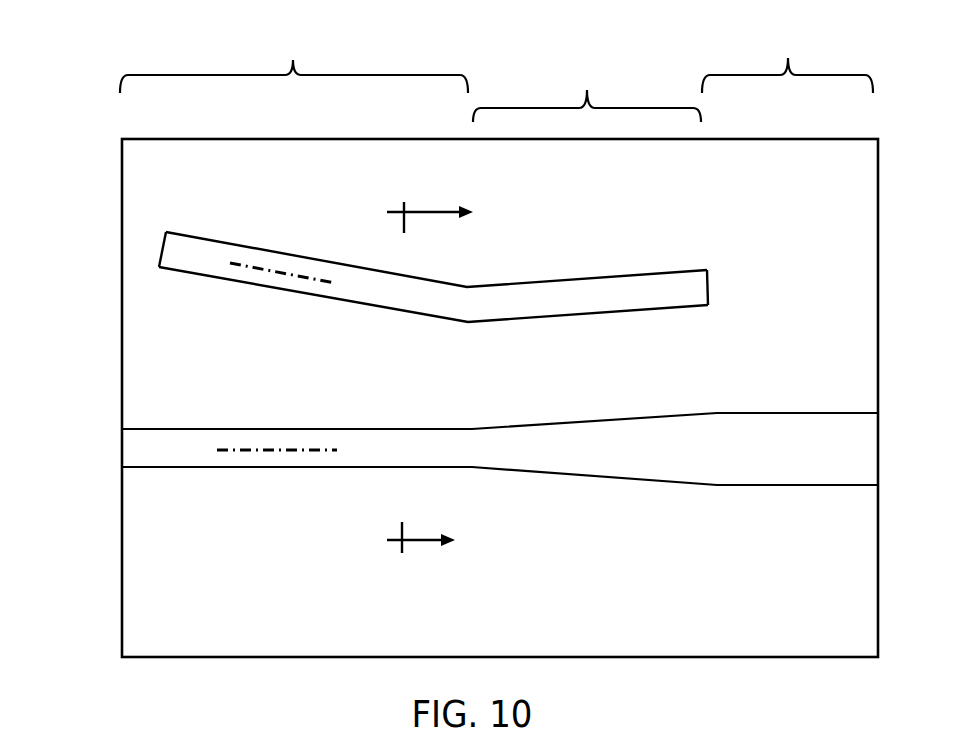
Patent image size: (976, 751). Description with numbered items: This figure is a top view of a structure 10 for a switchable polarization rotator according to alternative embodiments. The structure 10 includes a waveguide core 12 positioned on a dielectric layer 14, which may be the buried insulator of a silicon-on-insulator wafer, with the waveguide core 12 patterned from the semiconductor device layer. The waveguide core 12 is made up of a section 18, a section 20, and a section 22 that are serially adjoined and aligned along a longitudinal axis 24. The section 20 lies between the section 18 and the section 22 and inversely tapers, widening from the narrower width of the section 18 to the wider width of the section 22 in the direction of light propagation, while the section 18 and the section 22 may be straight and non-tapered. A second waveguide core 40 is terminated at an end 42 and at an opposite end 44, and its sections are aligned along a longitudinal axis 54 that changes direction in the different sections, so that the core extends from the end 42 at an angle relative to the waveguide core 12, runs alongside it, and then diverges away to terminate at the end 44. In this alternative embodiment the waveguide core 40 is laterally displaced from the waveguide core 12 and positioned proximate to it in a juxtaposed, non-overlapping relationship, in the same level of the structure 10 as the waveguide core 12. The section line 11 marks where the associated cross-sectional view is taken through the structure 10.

The structure 10 is at (459, 343).
The section line 11 is at (448, 379).
The waveguide core 12 is at (500, 491).
The dielectric layer 14 is at (155, 556).
The section 18 is at (294, 62).
The section 20 is at (587, 94).
The section 22 is at (787, 61).
The longitudinal axis 24 is at (282, 451).
The waveguide core 40 is at (421, 311).
The end 42 is at (158, 256).
The end 44 is at (708, 290).
The longitudinal axis 54 is at (283, 275).